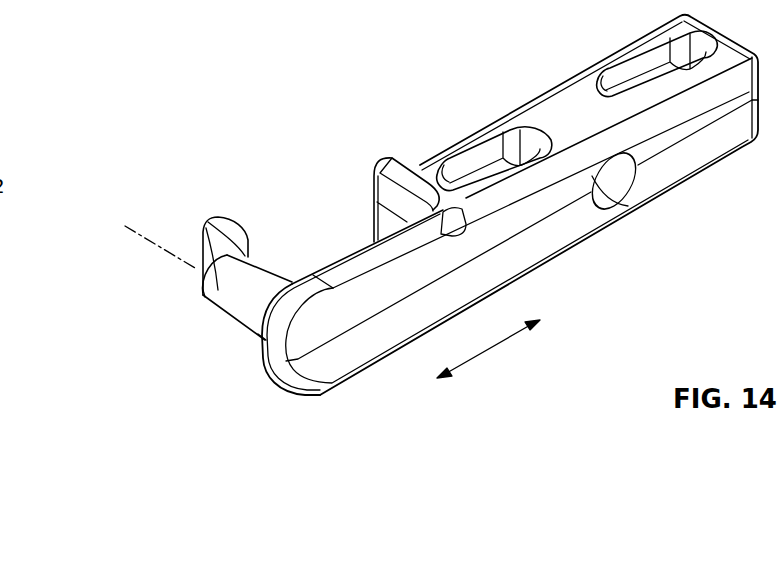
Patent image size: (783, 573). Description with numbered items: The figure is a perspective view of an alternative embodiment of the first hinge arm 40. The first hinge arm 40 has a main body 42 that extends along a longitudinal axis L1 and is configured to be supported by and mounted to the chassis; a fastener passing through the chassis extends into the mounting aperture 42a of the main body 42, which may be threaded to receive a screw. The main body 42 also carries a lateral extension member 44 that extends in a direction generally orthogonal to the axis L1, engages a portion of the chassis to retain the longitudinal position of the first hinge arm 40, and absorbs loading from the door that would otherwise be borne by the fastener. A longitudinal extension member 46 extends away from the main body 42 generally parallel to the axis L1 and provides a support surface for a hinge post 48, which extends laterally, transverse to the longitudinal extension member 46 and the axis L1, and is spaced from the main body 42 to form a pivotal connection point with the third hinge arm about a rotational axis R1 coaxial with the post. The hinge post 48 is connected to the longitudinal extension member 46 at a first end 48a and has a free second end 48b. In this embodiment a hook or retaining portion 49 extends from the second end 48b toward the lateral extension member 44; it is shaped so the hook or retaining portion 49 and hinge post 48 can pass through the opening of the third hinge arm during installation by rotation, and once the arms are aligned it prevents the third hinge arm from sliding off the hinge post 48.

The first hinge arm 40 is at (596, 283).
The main body 42 is at (604, 64).
The mounting aperture 42a is at (616, 198).
The lateral extension member 44 is at (424, 168).
The longitudinal extension member 46 is at (347, 256).
The hinge post 48 is at (260, 285).
The first end 48a is at (258, 335).
The second end 48b is at (200, 292).
The hook or retaining portion 49 is at (224, 237).
The rotational axis R1 is at (141, 234).
The longitudinal axis L1 is at (488, 349).